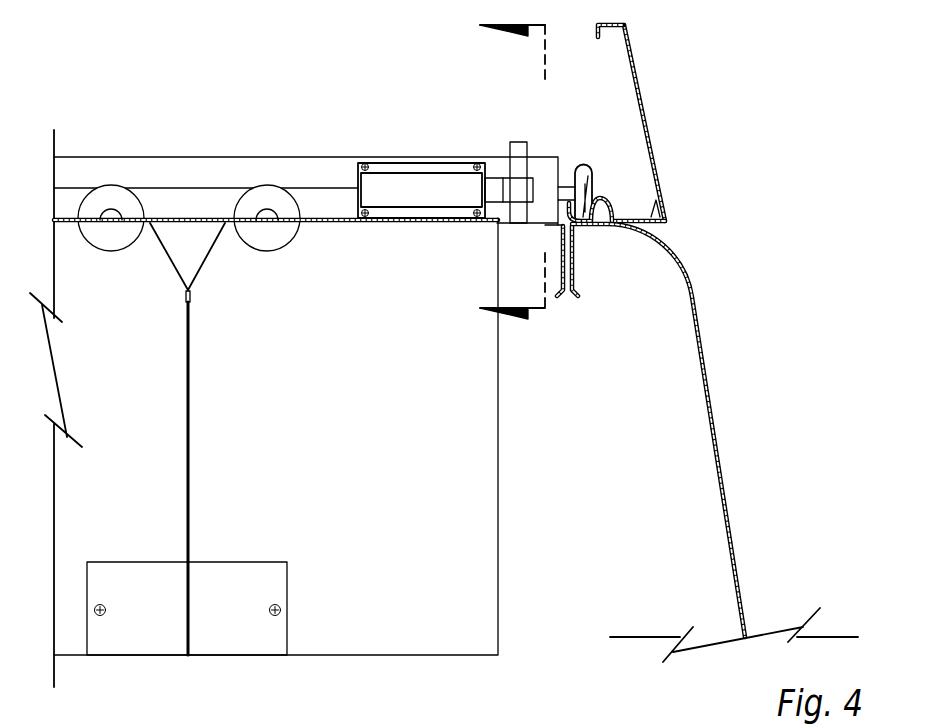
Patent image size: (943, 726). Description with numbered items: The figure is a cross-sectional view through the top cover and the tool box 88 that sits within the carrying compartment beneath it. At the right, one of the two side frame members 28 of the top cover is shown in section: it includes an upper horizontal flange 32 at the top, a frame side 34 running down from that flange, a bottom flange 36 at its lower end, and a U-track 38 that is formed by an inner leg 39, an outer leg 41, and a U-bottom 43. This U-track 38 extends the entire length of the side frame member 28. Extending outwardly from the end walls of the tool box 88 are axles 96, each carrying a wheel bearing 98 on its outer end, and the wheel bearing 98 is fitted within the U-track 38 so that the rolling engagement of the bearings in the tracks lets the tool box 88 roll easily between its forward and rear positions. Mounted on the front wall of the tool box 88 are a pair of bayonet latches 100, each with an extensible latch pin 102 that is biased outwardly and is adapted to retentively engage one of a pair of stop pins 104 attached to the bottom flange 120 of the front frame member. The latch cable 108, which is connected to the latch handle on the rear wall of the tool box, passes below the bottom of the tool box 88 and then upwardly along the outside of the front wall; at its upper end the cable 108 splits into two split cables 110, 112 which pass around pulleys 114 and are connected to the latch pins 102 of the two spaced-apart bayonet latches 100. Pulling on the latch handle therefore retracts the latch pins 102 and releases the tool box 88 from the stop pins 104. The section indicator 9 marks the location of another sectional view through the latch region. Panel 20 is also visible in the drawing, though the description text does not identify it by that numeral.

The section line 9- 9 is at (495, 172).
The panel 20 is at (715, 402).
The side frame member 28 is at (581, 146).
The upper horizontal flange 32 is at (612, 33).
The frame side 34 is at (640, 87).
The bottom flange 36 is at (660, 192).
The U-track 38 is at (600, 202).
The inner leg 39 is at (570, 203).
The outer leg 41 is at (607, 200).
The U-bottom 43 is at (585, 190).
The tool box 88 is at (498, 430).
The axle 96 is at (567, 188).
The wheel bearing 98 is at (580, 168).
The bayonet latch 100 is at (383, 173).
The latch pin 102 is at (508, 185).
The stop pin 104 is at (515, 145).
The latch cable 108 is at (190, 378).
The split cable 110 is at (203, 272).
The split cable 112 is at (173, 273).
The pulley 114 is at (111, 190).
The bottom flange 120 is at (193, 218).